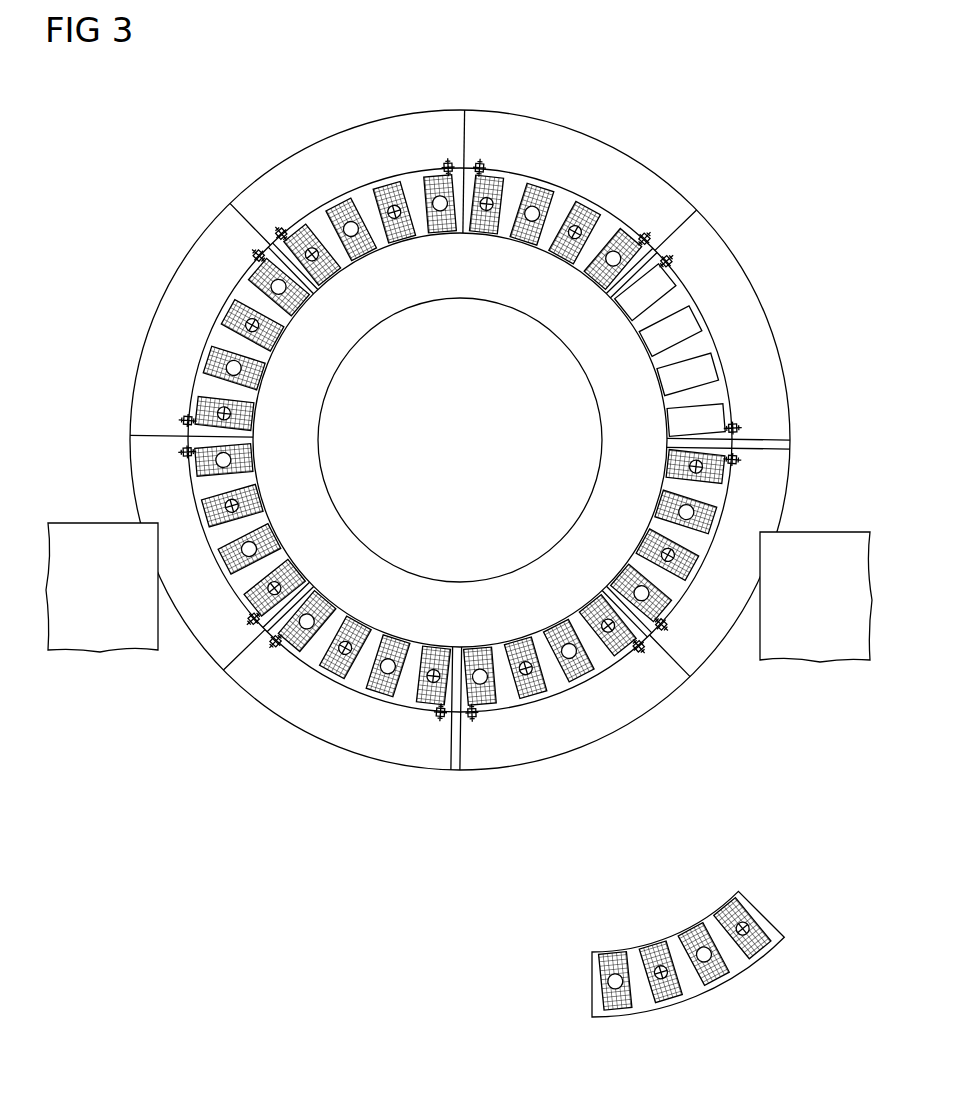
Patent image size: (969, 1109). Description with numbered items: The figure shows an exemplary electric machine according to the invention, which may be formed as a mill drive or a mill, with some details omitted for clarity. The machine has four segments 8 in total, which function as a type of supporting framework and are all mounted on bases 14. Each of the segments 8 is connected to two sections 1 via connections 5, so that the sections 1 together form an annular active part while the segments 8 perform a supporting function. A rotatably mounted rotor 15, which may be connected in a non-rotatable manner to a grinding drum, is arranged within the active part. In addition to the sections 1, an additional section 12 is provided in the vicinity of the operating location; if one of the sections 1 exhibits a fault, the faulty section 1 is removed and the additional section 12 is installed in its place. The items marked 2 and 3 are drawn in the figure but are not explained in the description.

The stator segment 1 is at (417, 183).
The empty slot 2 is at (653, 278).
The coil / winding 3 is at (236, 318).
The fastening screw 5 is at (452, 157).
The outer ring / housing 8 is at (185, 290).
The detached stator segment 12 is at (690, 985).
The mounting block 14 is at (85, 633).
The inner bore / rotor opening 15 is at (523, 302).